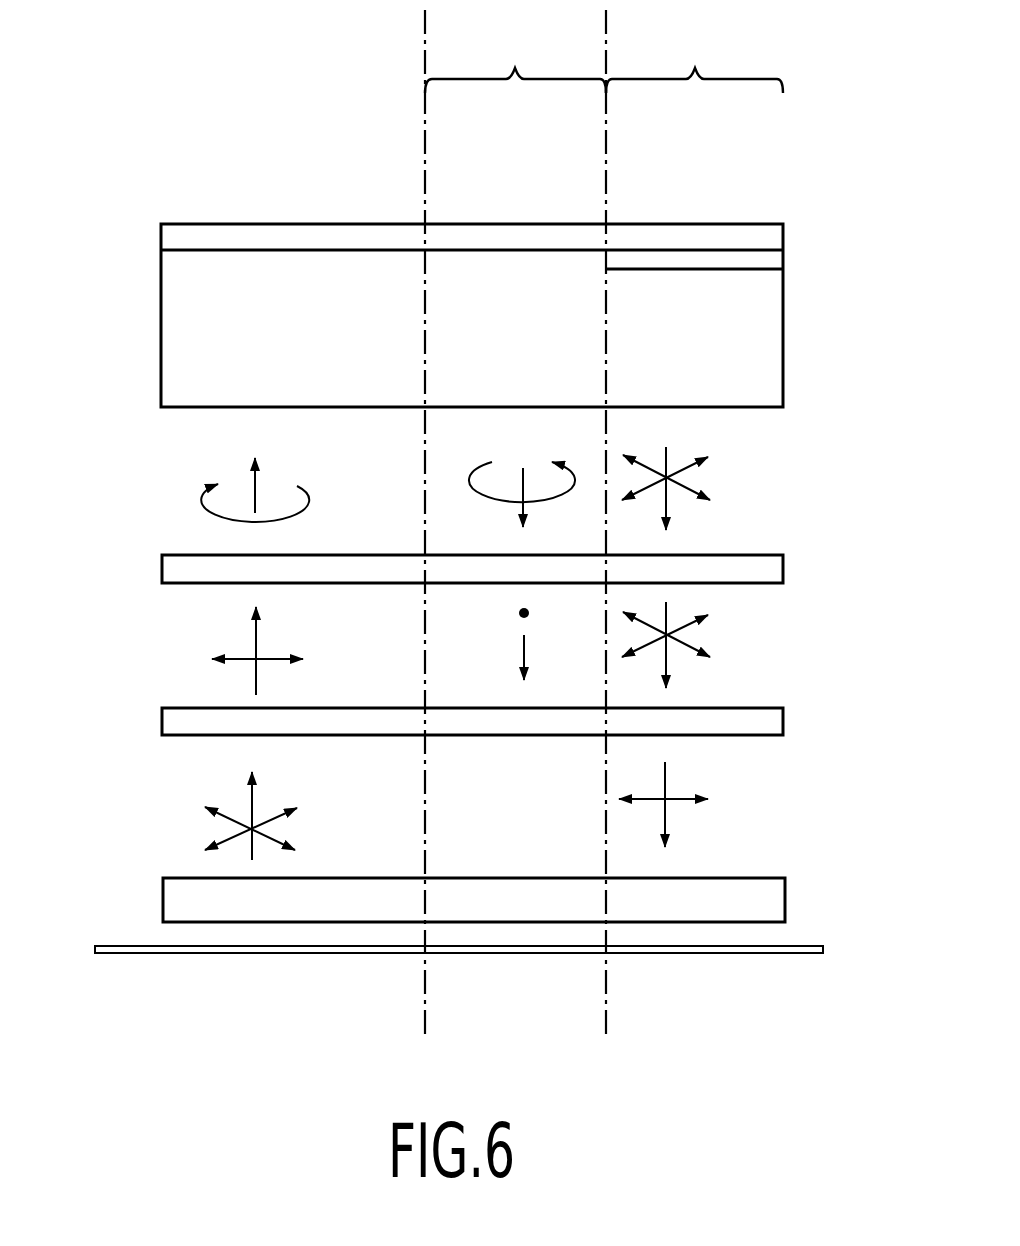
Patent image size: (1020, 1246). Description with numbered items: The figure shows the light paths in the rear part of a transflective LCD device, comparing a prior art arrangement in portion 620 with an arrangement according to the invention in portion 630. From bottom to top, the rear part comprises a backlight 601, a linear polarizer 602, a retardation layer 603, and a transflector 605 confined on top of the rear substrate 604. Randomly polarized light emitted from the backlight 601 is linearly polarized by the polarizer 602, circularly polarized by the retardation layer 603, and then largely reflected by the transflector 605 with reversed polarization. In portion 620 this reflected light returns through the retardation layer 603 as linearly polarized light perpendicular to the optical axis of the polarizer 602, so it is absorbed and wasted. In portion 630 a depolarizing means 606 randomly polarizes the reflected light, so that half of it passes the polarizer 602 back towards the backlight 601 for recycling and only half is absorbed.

The backlight 601 is at (172, 895).
The linear polarizer 602 is at (162, 723).
The retardation layer 603 is at (162, 574).
The rear substrate 604 is at (180, 353).
The transflector 605 is at (775, 233).
The depolarizing means 606 is at (775, 259).
The portion 620 is at (515, 56).
The portion 630 is at (694, 56).